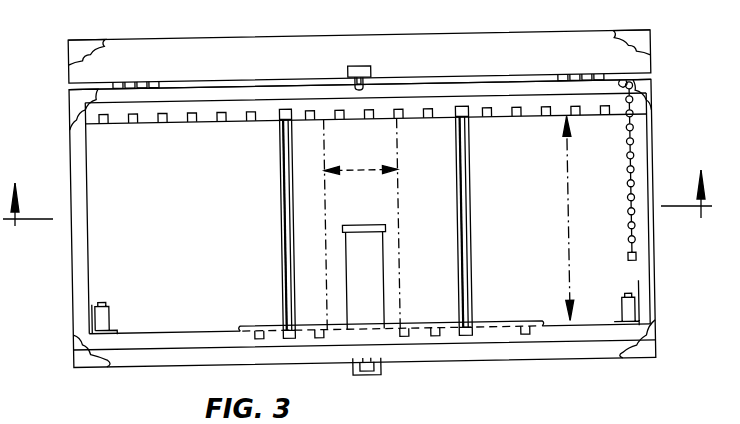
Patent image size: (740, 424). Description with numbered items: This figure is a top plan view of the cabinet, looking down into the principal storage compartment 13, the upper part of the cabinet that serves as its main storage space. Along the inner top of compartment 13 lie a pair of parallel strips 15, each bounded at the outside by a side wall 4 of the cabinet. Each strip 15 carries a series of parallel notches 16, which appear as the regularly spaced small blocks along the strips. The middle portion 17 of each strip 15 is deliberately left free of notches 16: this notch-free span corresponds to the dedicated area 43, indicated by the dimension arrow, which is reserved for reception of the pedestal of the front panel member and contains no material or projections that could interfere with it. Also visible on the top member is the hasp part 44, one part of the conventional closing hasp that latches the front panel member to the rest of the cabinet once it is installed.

The hasp part 44 is at (364, 66).
The middle portion of strip 17 is at (380, 112).
The parallel strip 15 is at (478, 107).
The notch 16 is at (548, 107).
The dedicated pedestal area 43 is at (367, 170).
The principal storage compartment 13 is at (568, 230).
The side wall 4 is at (357, 210).